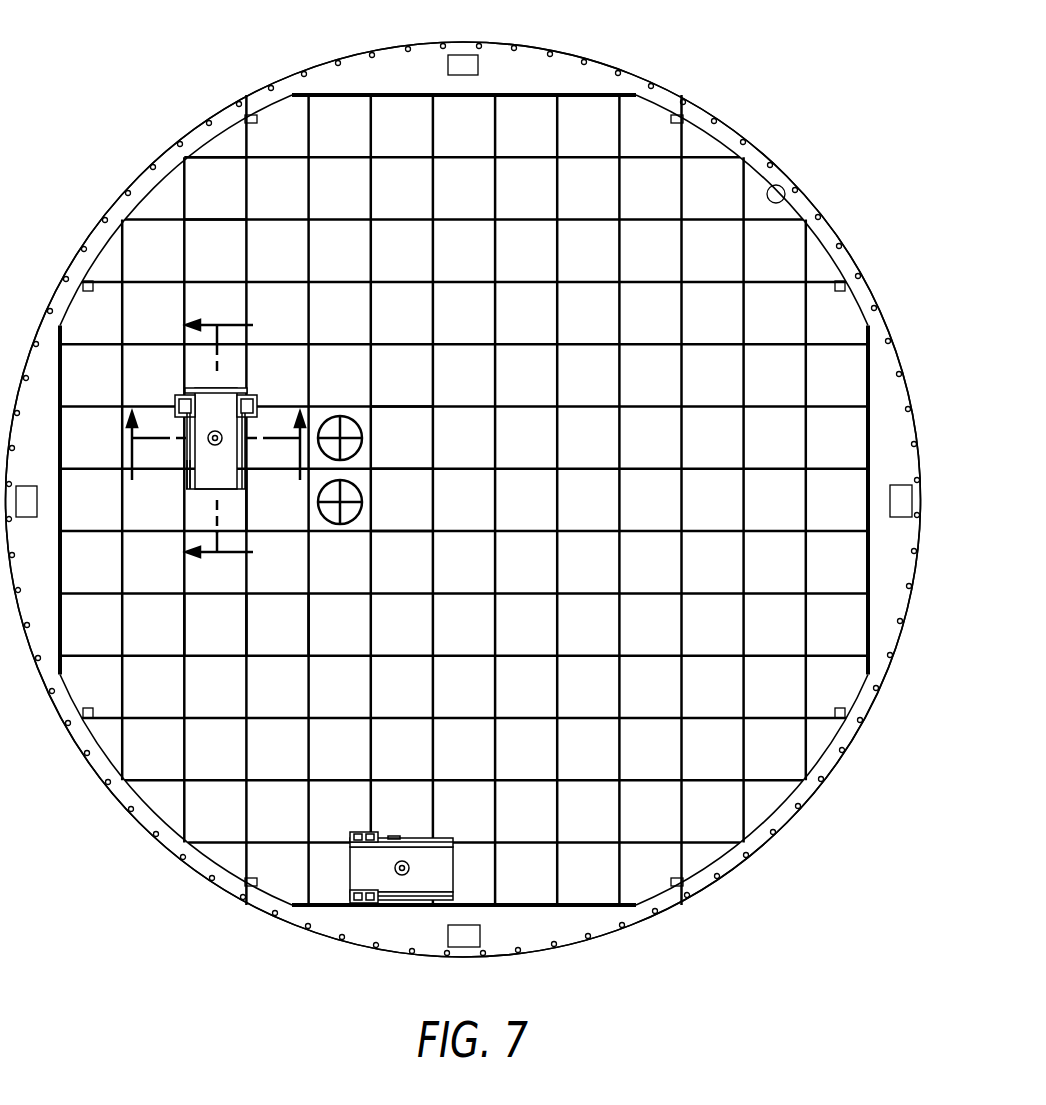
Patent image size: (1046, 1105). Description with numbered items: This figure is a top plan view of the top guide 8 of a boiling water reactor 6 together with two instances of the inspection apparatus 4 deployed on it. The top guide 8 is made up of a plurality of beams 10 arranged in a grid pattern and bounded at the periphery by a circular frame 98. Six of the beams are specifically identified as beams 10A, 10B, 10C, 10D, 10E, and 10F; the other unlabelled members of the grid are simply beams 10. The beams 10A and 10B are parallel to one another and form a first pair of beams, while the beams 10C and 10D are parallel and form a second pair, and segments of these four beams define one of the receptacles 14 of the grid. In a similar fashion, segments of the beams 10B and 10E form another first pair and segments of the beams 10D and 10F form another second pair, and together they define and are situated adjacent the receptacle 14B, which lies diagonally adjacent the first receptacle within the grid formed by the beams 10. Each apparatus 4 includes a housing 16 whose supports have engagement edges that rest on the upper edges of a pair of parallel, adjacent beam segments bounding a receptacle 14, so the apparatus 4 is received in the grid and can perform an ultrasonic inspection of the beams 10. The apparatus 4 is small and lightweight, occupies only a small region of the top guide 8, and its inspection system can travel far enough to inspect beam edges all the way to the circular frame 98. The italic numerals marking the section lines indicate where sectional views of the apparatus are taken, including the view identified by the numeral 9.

The boiling water reactor 6 is at (704, 42).
The top guide 8 is at (767, 140).
The circular frame 98 is at (786, 186).
The beams 10 is at (158, 220).
The beam 10A is at (183, 605).
The beam 10B is at (244, 602).
The beam 10C is at (413, 386).
The beam 10D is at (393, 468).
The beam 10E is at (307, 602).
The beam 10F is at (380, 532).
The receptacles 14 is at (210, 188).
The receptacle 14B is at (277, 502).
The apparatus 4 is at (263, 384).
The housing 16 is at (187, 511).
The section line 9 is at (231, 438).